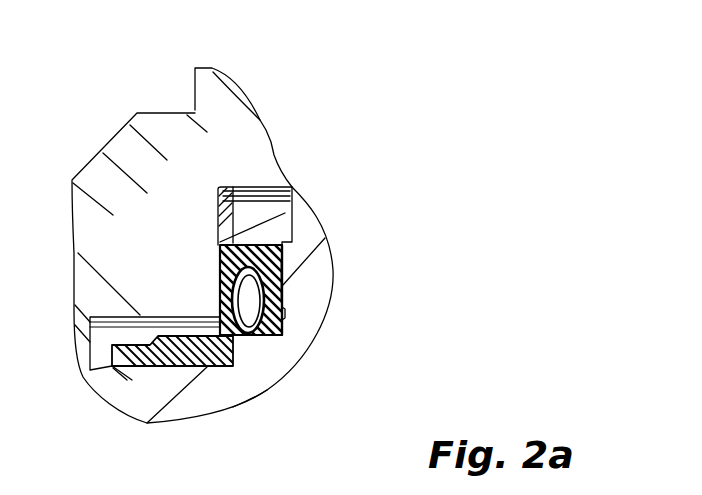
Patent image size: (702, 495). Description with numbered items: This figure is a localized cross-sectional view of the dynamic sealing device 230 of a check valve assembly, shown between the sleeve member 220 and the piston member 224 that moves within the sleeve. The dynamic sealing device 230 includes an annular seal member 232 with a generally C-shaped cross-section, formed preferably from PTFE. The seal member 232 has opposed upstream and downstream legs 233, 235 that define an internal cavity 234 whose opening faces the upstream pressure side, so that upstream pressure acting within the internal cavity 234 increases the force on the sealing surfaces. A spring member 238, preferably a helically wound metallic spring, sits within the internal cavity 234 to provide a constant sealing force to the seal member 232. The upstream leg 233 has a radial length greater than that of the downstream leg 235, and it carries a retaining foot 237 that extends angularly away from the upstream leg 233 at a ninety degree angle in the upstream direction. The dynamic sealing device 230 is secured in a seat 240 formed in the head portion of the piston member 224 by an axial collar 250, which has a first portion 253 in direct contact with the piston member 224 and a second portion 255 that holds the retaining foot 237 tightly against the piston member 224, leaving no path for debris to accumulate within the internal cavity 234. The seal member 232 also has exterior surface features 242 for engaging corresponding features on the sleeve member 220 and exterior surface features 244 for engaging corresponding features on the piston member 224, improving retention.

The sleeve member 220 is at (213, 92).
The piston member 224 is at (240, 398).
The dynamic sealing device 230 is at (286, 232).
The seal member 232 is at (240, 187).
The upstream leg 233 is at (217, 253).
The internal cavity 234 is at (237, 345).
The downstream leg 235 is at (265, 337).
The retaining foot 237 is at (214, 370).
The spring member 238 is at (283, 285).
The seat 240 is at (283, 257).
The exterior surface features 242 is at (202, 322).
The exterior surface features 244 is at (286, 313).
The axial collar 250 is at (128, 334).
The first portion 253 is at (127, 380).
The second portion 255 is at (188, 335).